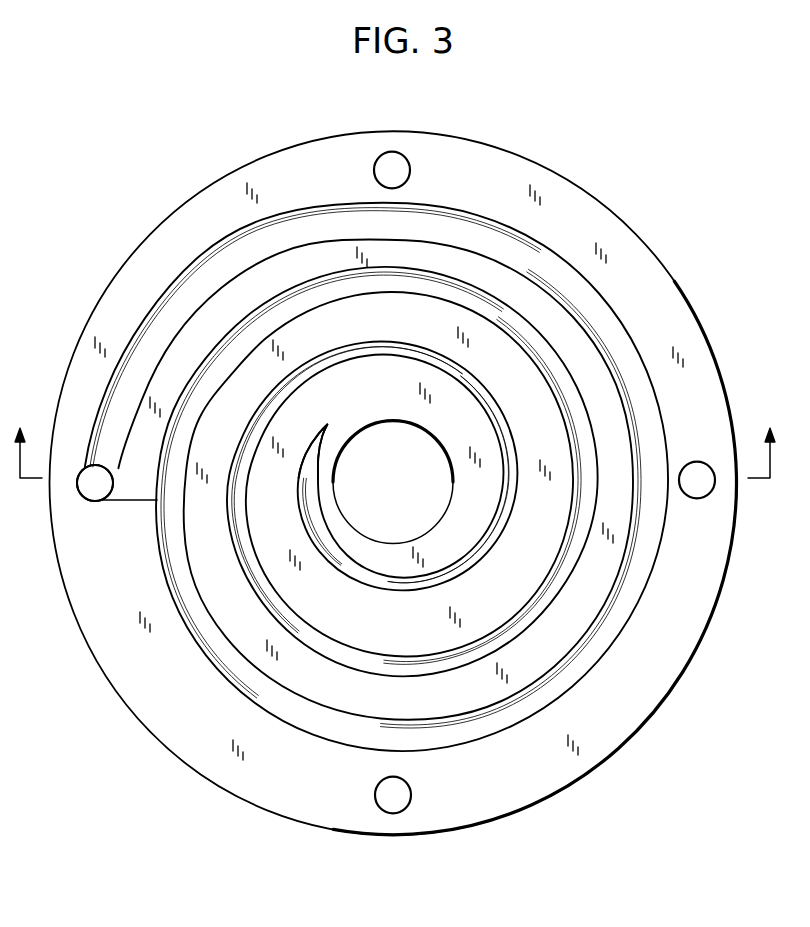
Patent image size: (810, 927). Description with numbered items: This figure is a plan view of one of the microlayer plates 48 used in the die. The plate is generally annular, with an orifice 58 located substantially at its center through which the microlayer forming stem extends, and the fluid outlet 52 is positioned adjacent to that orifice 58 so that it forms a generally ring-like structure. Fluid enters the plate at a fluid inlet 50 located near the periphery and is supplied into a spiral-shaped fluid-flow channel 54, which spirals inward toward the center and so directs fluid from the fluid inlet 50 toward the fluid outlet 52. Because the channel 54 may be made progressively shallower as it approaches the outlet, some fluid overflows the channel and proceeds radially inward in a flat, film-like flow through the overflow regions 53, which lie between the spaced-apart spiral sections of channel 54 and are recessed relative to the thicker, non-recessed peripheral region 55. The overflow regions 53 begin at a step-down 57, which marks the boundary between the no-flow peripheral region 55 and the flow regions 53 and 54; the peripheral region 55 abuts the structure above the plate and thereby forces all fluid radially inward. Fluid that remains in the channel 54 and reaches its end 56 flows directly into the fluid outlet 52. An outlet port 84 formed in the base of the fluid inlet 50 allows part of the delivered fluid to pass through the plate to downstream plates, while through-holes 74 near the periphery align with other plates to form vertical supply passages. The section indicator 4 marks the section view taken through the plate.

The section line 4- 4 is at (395, 443).
The microlayer plate 48 is at (667, 209).
The fluid inlet 50 is at (93, 468).
The fluid outlet 52 is at (458, 502).
The overflow regions 53 is at (257, 283).
The fluid-flow channel 54 is at (197, 292).
The non-recessed peripheral region 55 is at (587, 227).
The end of the channel 56 is at (323, 423).
The step-down 57 is at (133, 506).
The orifice 58 is at (407, 512).
The through-holes 74 is at (398, 178).
The outlet port 84 is at (95, 502).